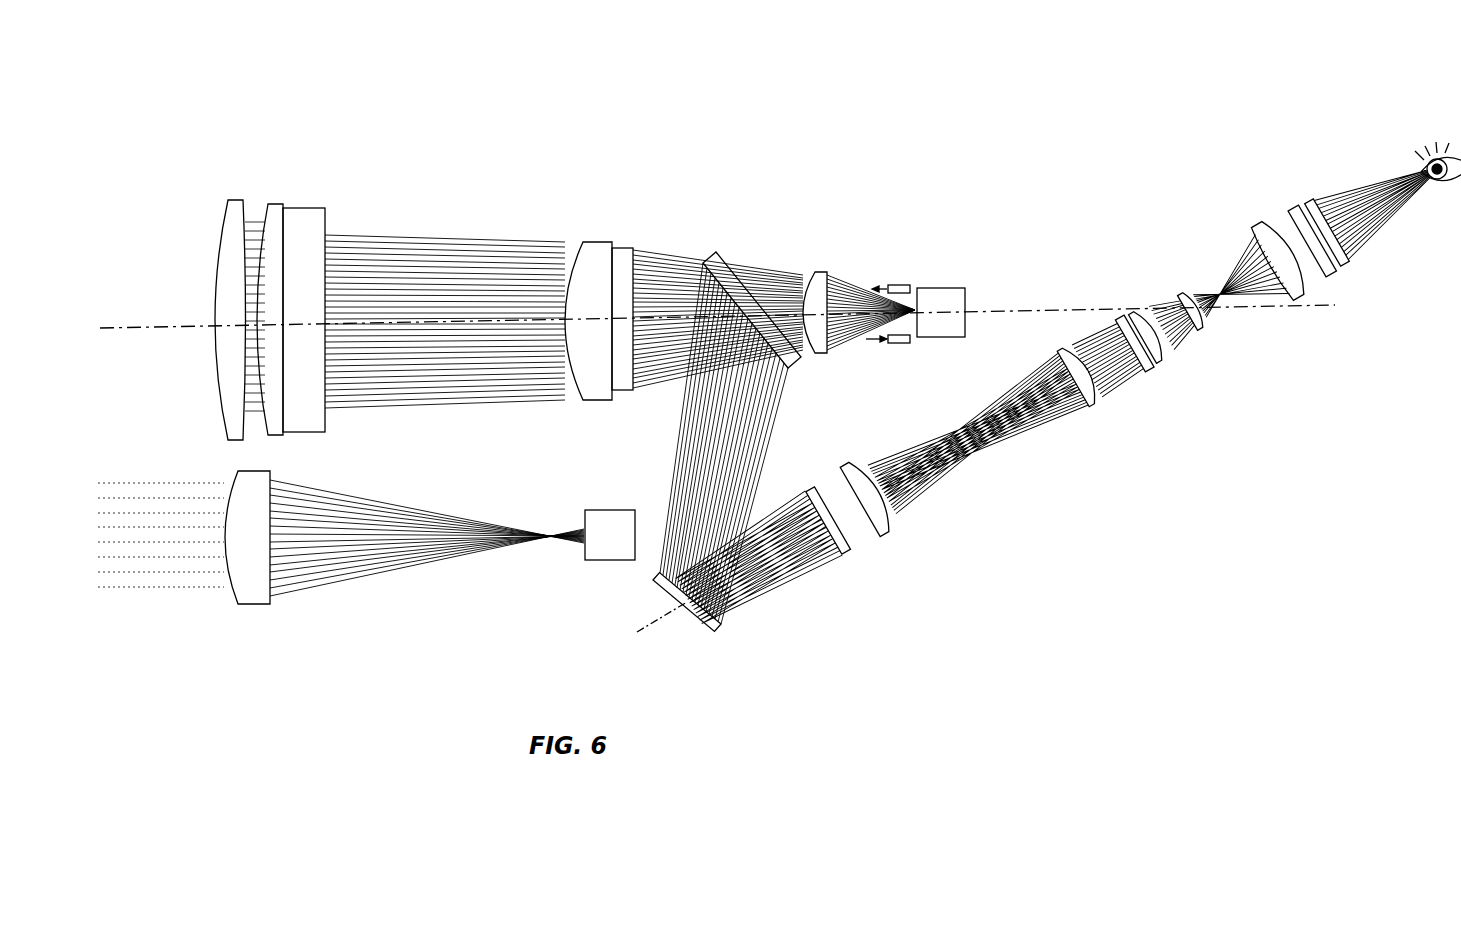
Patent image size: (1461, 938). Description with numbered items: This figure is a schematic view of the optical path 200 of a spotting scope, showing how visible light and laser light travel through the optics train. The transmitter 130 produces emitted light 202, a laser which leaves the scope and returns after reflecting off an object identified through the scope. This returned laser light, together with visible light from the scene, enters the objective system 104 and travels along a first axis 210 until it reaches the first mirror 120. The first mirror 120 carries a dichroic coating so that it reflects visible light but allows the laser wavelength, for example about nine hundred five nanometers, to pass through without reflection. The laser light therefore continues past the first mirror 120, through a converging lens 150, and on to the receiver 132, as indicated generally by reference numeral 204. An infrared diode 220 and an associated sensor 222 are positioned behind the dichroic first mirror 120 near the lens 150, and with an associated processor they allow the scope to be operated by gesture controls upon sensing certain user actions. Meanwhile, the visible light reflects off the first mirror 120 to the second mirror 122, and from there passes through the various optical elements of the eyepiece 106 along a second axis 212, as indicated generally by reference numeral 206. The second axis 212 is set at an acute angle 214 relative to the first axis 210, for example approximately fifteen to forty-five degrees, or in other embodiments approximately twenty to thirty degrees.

The objective system 104 is at (300, 185).
The eyepiece 106 is at (1254, 268).
The first mirror 120 is at (703, 262).
The second mirror 122 is at (690, 618).
The transmitter 130 is at (615, 562).
The receiver 132 is at (938, 289).
The converging lens 150 is at (815, 270).
The optical path 200 is at (776, 225).
The emitted light 202 is at (172, 605).
The laser light path to receiver 204 is at (862, 276).
The visible light path to eyepiece 206 is at (818, 588).
The first axis 210 is at (985, 306).
The second axis 212 is at (663, 617).
The acute angle 214 is at (1243, 284).
The infrared diode 220 is at (900, 284).
The sensor 222 is at (903, 343).